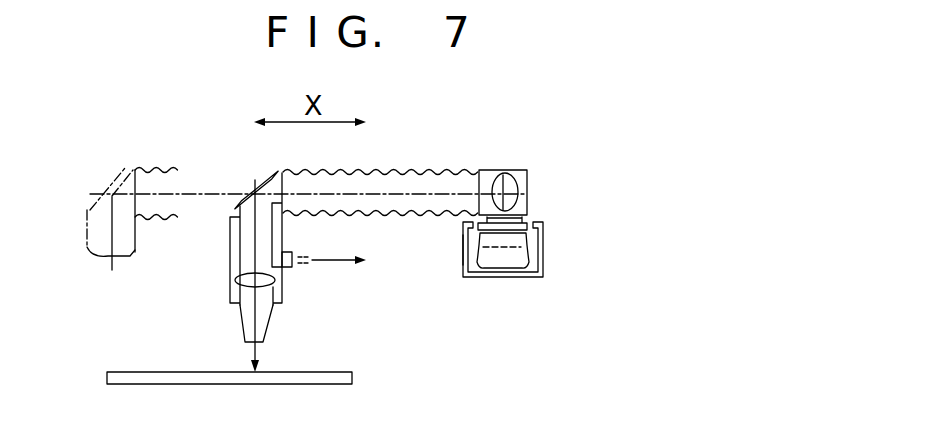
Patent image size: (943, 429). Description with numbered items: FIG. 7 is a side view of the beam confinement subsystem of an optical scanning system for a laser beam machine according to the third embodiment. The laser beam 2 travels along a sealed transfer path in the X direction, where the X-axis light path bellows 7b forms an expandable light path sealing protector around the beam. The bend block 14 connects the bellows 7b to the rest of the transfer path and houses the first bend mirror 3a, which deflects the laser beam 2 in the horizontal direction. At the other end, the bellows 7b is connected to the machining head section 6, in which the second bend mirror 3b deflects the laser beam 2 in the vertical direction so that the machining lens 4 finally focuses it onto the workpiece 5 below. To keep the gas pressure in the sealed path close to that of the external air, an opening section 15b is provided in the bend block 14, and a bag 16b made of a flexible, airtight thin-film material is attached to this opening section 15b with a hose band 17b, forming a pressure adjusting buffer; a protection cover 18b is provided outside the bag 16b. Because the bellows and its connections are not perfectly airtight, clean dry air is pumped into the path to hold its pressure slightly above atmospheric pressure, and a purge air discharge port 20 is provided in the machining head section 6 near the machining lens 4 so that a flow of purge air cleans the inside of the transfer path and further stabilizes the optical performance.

The laser beam 2 is at (422, 199).
The first bend mirror 3a is at (520, 190).
The second bend mirror 3b is at (252, 170).
The machining lens 4 is at (283, 292).
The workpiece 5 is at (108, 378).
The machining head section 6 is at (235, 258).
The X-axis light path bellows 7b is at (395, 181).
The bend block 14 is at (507, 168).
The opening section 15b is at (528, 217).
The bag 16b is at (532, 253).
The hose band 17b is at (540, 227).
The protection cover 18b is at (461, 242).
The purge air discharge port 20 is at (286, 275).